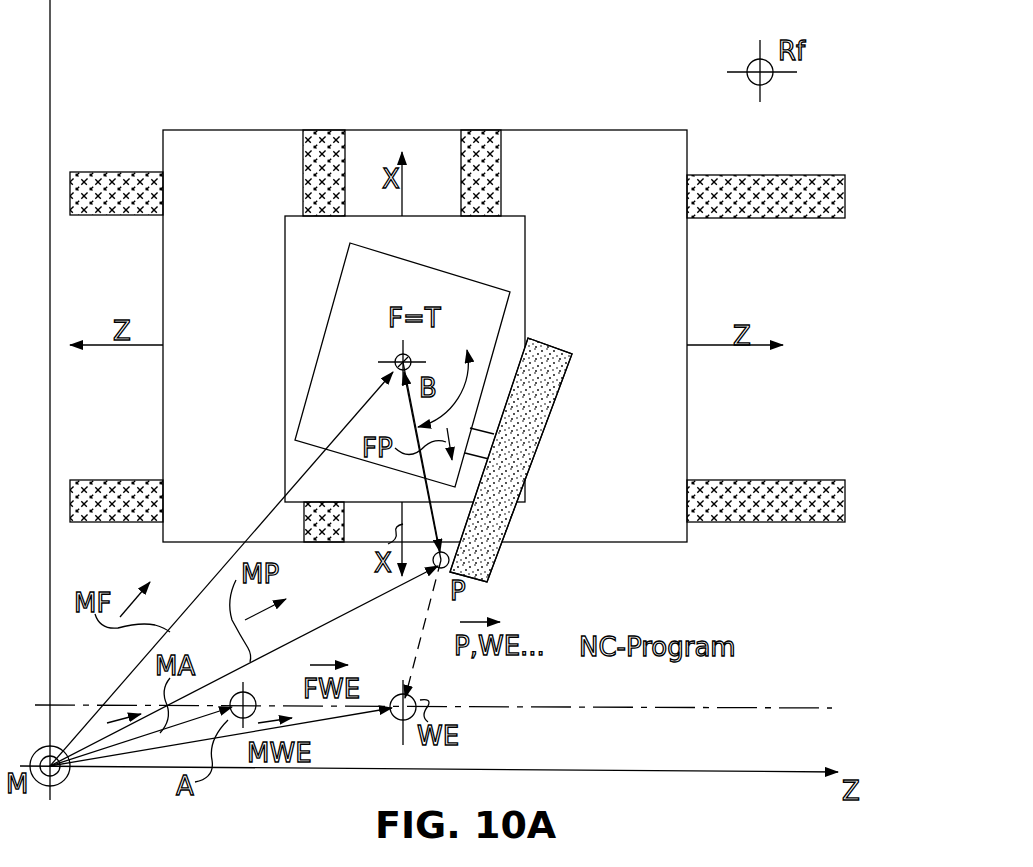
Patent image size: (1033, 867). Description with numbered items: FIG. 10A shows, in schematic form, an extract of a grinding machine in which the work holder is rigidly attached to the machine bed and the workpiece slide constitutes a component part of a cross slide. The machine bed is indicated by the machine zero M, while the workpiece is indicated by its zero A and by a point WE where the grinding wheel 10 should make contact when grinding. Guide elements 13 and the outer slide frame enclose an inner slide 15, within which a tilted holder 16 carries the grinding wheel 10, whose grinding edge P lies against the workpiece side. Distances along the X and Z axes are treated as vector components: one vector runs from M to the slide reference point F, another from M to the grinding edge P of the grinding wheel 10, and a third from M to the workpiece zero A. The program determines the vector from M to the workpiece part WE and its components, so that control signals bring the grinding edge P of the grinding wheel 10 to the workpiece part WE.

The grinding wheel 10 is at (552, 424).
The guide elements 13 is at (326, 130).
The carriage 15 is at (283, 268).
The tool holder 16 is at (322, 318).